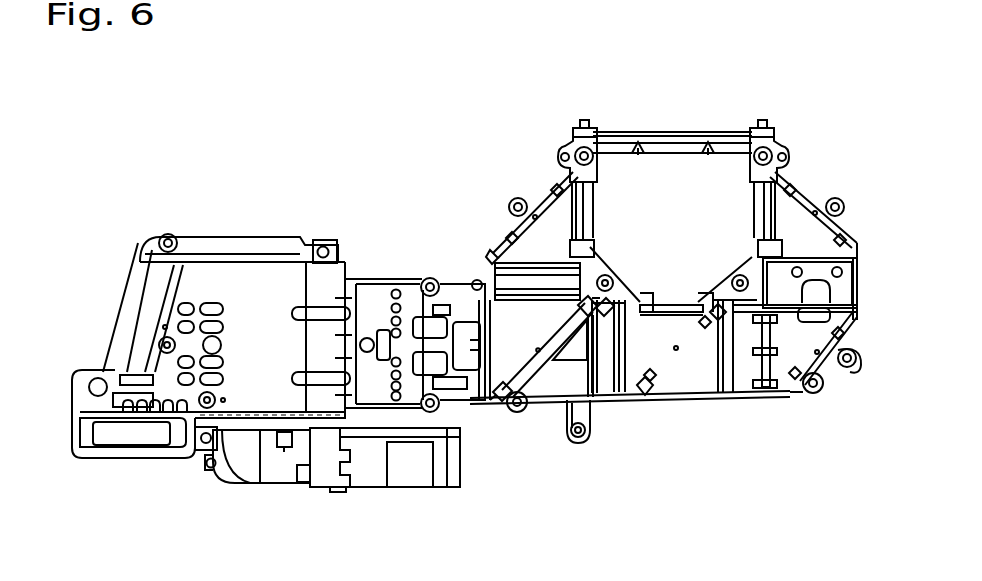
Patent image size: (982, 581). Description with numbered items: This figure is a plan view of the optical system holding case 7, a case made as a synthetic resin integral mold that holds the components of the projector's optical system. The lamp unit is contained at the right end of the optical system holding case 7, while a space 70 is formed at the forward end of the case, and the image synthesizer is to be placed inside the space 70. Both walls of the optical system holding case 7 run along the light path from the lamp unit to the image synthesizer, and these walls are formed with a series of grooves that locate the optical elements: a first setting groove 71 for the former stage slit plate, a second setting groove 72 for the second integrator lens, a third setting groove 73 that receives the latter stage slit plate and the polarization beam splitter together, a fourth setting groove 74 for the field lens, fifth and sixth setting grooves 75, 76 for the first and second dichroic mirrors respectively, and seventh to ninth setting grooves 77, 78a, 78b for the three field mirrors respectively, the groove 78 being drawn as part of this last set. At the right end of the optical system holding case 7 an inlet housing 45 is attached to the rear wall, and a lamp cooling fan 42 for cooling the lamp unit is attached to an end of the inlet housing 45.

The optical system holding case 7 is at (382, 129).
The lamp cooling fan 42 is at (372, 483).
The inlet housing 45 is at (272, 483).
The space 70 is at (670, 203).
The first setting groove 71 is at (421, 280).
The second setting groove 72 is at (453, 293).
The third setting groove 73 is at (473, 292).
The fourth setting groove 74 is at (455, 293).
The fifth setting groove 75 is at (533, 376).
The sixth setting groove 76 is at (647, 392).
The seventh setting groove 77 is at (805, 394).
The setting groove 78 is at (385, 305).
The eighth setting groove 78a is at (545, 192).
The ninth setting groove 78b is at (790, 175).